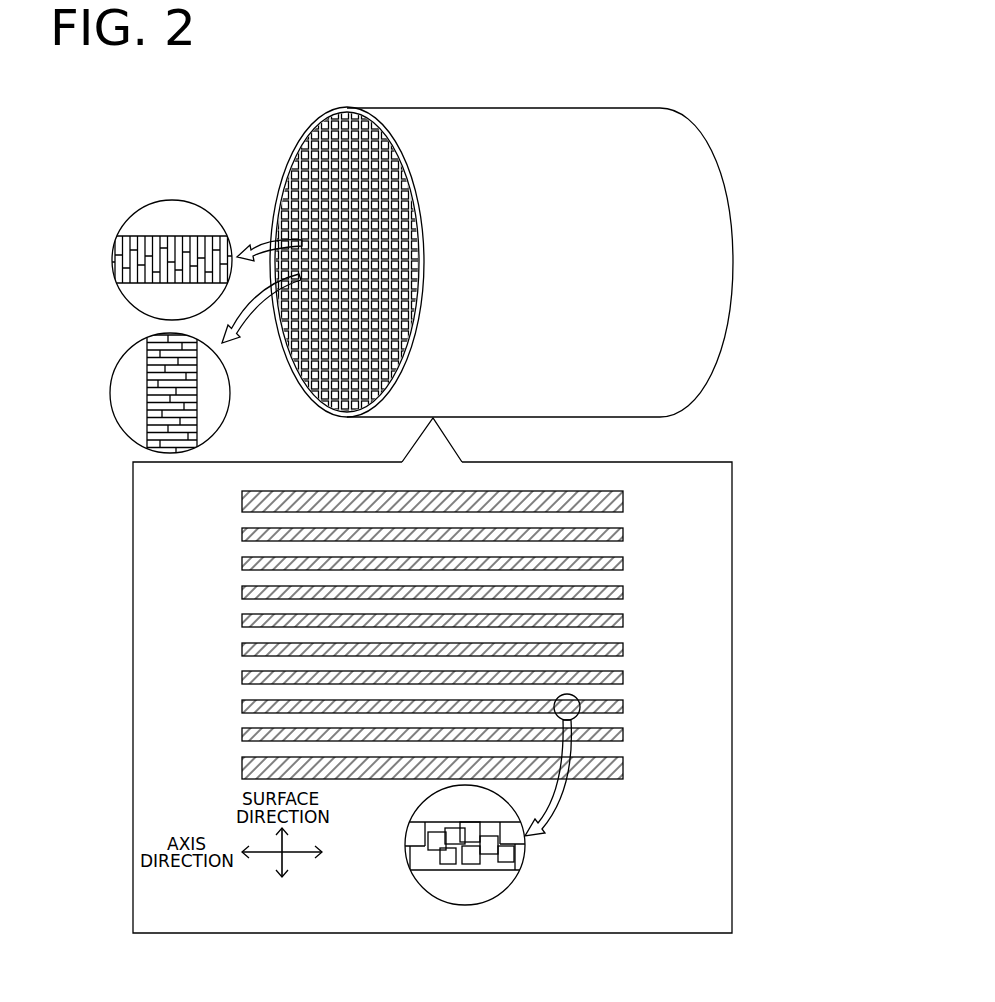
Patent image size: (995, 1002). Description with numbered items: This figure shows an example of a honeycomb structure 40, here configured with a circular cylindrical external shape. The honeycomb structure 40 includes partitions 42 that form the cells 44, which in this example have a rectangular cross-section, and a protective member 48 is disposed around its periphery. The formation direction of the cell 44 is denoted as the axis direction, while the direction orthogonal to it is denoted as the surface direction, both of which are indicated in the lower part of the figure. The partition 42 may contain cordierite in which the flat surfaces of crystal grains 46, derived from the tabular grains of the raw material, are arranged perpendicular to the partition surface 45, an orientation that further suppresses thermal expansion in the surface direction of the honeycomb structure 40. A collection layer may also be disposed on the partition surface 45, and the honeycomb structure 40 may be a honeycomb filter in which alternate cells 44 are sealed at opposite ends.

The honeycomb structure 40 is at (683, 88).
The partition 42 is at (296, 186).
The cell 44 is at (275, 548).
The partition surface 45 is at (147, 278).
The crystal grain 46 is at (132, 245).
The protective member 48 is at (316, 126).